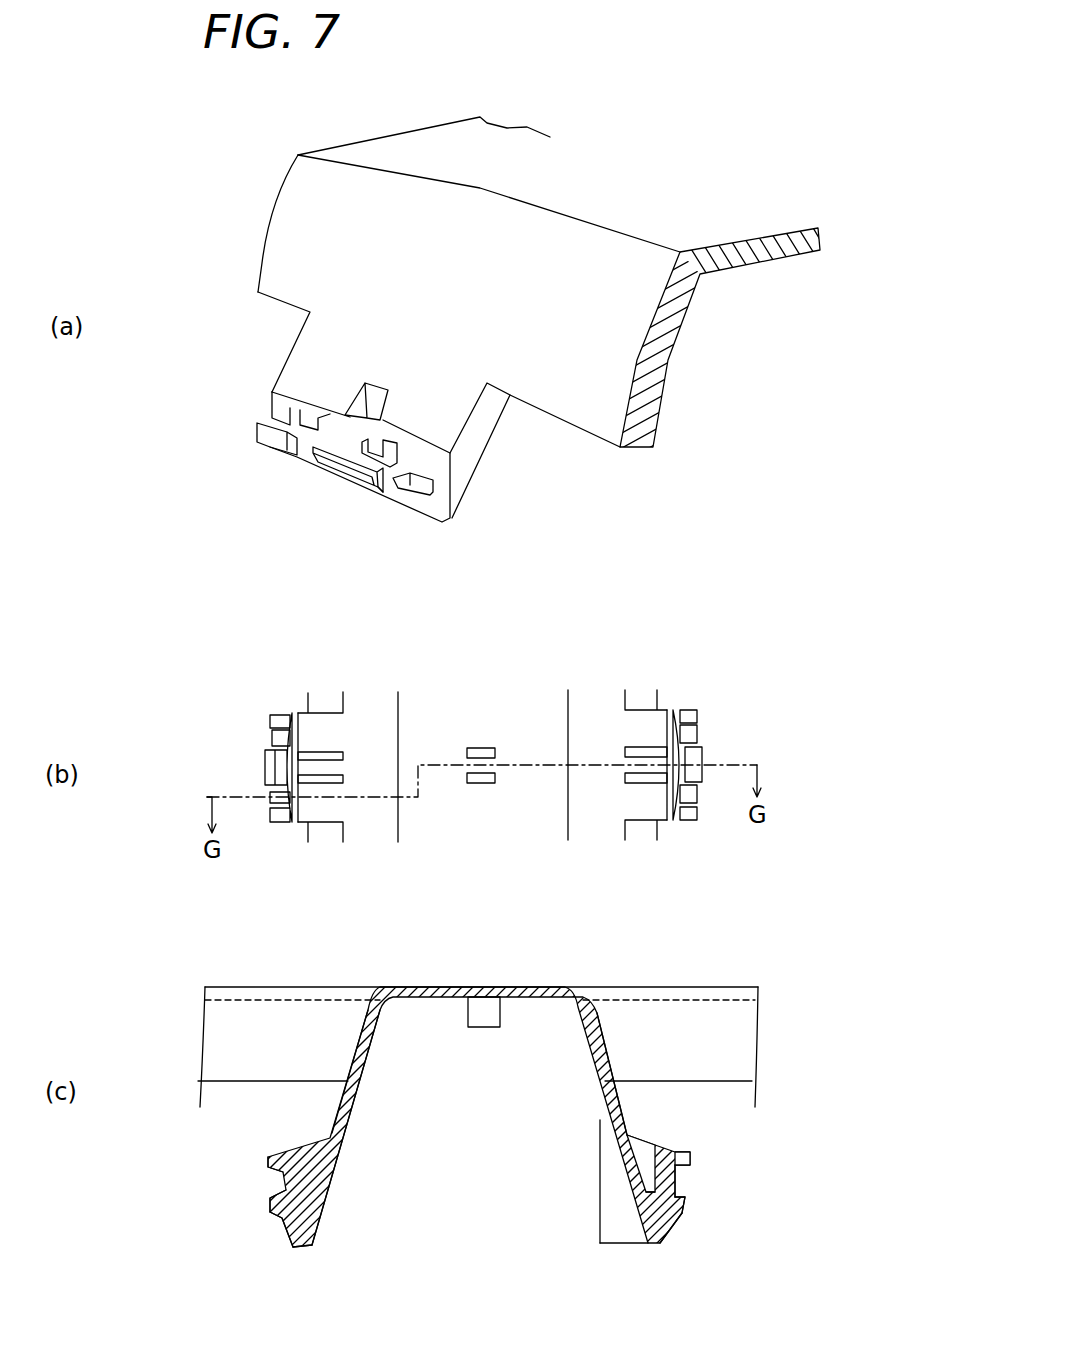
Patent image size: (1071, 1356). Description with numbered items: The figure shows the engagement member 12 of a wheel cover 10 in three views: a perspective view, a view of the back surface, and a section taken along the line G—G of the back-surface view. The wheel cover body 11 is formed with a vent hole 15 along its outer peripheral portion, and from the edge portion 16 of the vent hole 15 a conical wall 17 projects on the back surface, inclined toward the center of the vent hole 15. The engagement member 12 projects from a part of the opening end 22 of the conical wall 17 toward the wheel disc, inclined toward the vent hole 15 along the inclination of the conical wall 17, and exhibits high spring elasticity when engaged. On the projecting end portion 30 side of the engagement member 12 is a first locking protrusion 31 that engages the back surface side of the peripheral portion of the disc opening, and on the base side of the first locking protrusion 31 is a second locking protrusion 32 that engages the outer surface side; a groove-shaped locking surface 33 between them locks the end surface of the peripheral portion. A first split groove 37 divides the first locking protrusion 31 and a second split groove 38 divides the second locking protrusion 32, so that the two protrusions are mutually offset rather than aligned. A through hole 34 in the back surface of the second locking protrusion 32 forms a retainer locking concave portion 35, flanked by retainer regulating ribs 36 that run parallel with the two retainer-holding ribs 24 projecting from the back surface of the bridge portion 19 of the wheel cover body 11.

The wheel cover 10 is at (613, 141).
The wheel cover body 11 is at (333, 985).
The engagement member 12 is at (460, 413).
The vent hole 15 is at (258, 208).
The edge portion 16 is at (362, 163).
The conical wall 17 is at (618, 357).
The bridge portion 19 is at (432, 143).
The opening end 22 is at (583, 435).
The retainer-holding rib 24 is at (478, 748).
The projecting end portion 30 is at (347, 497).
The first locking protrusion 31 is at (283, 453).
The second locking protrusion 32 is at (270, 392).
The locking surface 33 is at (428, 475).
The through hole 34 is at (370, 383).
The retainer locking concave portion 35 is at (638, 1183).
The retainer regulating rib 36 is at (327, 748).
The first split groove 37 is at (383, 500).
The second split groove 38 is at (362, 442).